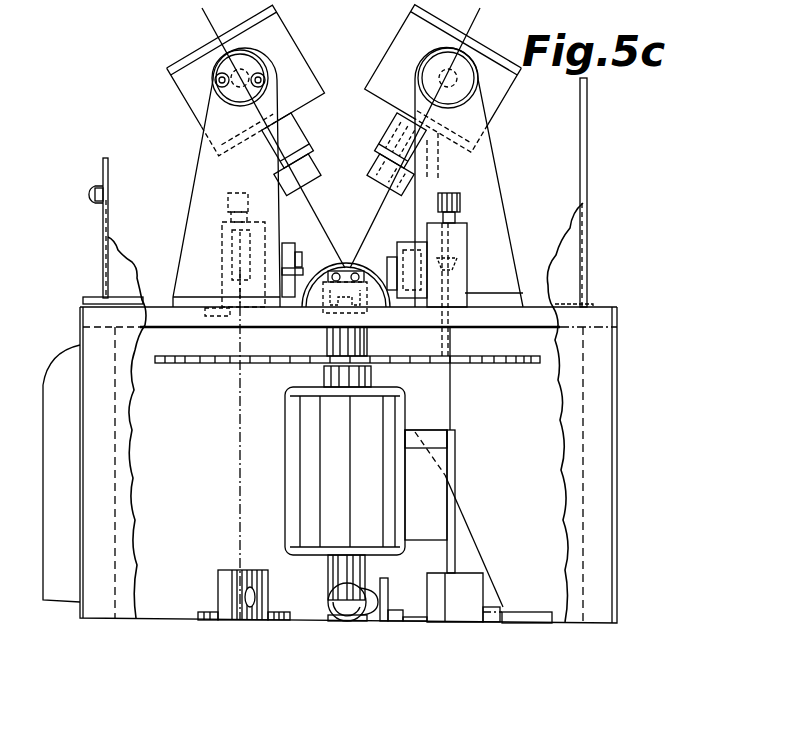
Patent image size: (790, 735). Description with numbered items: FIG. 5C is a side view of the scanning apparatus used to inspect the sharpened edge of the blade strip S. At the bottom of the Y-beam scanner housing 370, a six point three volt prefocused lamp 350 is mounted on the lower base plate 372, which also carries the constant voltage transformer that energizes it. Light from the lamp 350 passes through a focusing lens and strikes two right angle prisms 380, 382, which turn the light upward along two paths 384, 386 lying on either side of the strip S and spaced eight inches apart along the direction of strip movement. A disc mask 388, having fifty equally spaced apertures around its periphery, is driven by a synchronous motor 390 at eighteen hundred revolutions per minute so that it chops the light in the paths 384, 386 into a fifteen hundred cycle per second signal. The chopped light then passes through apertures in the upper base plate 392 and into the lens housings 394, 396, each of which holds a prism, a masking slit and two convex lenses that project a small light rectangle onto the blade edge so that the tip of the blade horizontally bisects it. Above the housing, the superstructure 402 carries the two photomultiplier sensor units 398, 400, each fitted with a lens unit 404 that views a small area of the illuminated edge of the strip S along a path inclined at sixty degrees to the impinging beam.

The prefocused lamp 350 is at (333, 600).
The Y-beam scanner housing 370 is at (597, 265).
The lower base plate 372 is at (412, 620).
The right angle prism 380 is at (478, 611).
The right angle prism 382 is at (236, 610).
The light path 384 is at (450, 388).
The light path 386 is at (240, 470).
The disc mask 388 is at (453, 367).
The synchronous motor 390 is at (286, 425).
The upper base plate 392 is at (490, 326).
The lens housing 394 is at (447, 261).
The lens housing 396 is at (232, 250).
The photomultiplier sensor unit 398 is at (293, 70).
The photomultiplier sensor unit 400 is at (397, 50).
The superstructure 402 is at (108, 174).
The lens unit 404 is at (292, 200).
The strip S is at (350, 260).